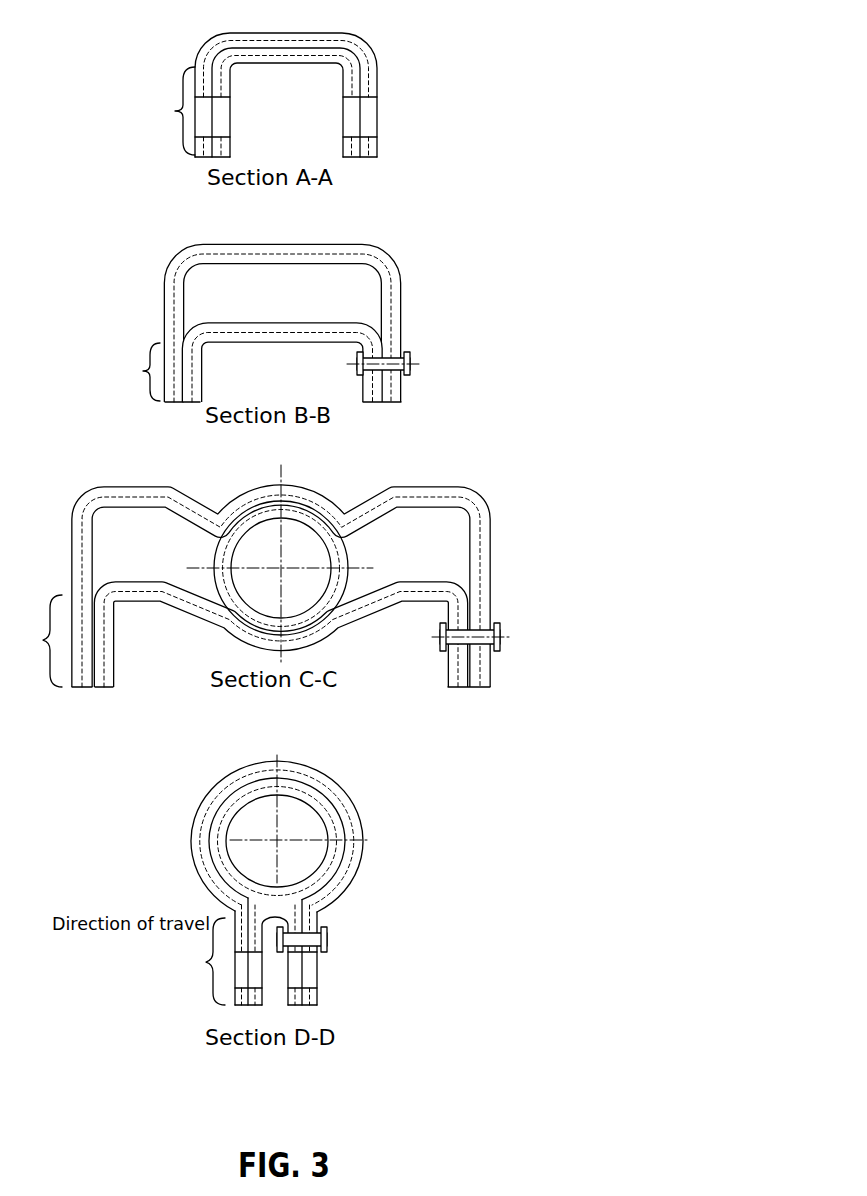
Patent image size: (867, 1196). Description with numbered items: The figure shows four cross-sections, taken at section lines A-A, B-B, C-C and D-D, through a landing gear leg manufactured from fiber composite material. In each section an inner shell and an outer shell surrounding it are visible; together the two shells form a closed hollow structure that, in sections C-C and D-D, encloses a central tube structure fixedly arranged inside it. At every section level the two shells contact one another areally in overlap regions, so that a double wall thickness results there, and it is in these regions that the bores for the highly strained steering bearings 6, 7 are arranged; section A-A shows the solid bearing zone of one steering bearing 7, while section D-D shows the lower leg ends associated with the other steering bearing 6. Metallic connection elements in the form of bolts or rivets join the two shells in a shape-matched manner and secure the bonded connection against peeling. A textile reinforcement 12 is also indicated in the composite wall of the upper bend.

The steering bearing 6 is at (320, 967).
The steering bearing 7 is at (367, 117).
The textile reinforcement 12 is at (362, 44).